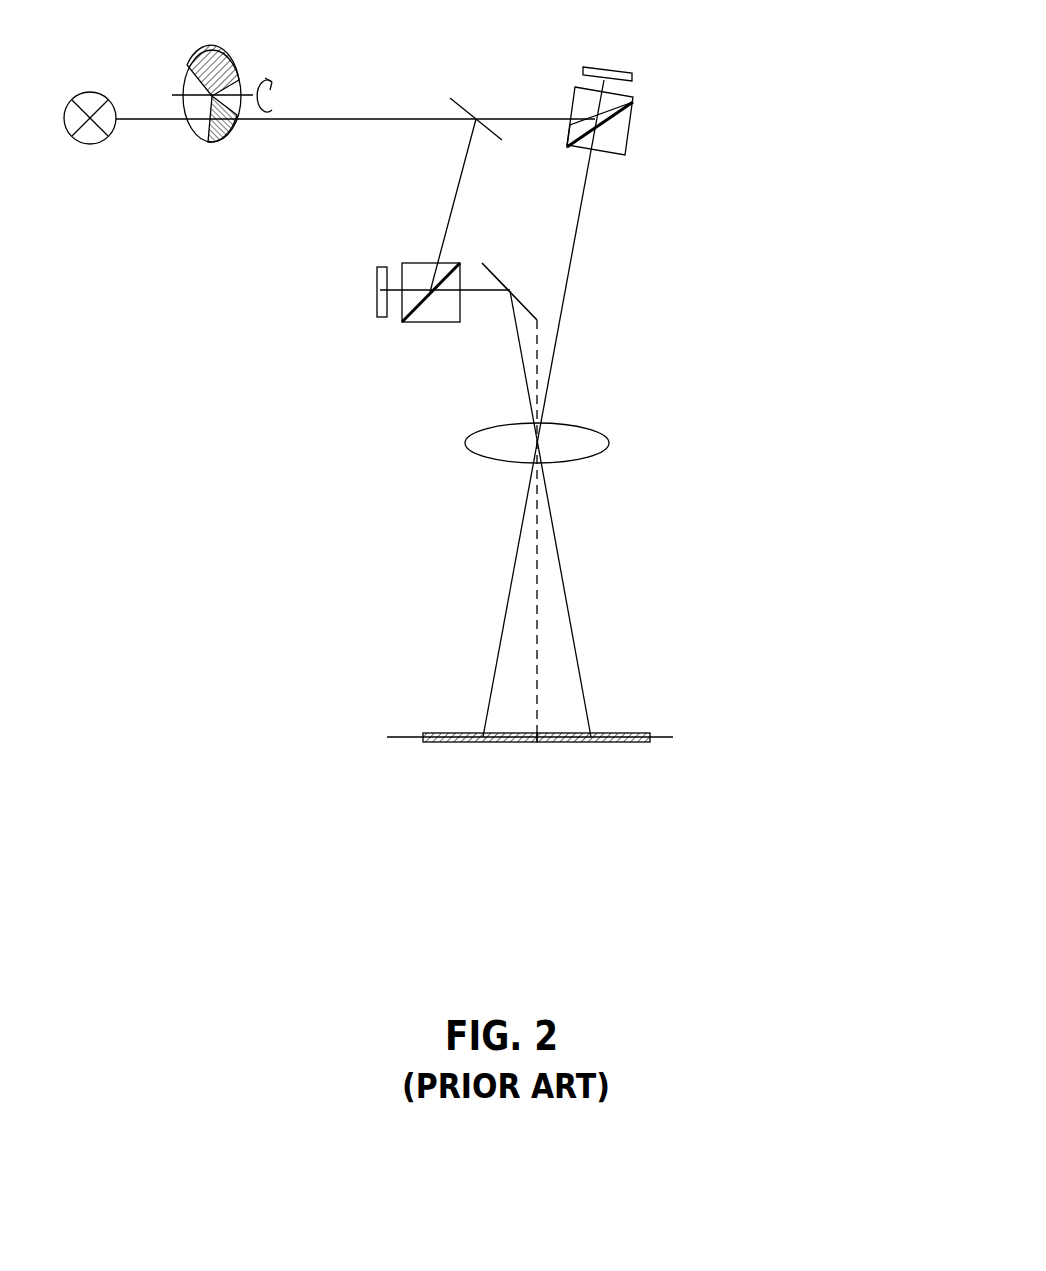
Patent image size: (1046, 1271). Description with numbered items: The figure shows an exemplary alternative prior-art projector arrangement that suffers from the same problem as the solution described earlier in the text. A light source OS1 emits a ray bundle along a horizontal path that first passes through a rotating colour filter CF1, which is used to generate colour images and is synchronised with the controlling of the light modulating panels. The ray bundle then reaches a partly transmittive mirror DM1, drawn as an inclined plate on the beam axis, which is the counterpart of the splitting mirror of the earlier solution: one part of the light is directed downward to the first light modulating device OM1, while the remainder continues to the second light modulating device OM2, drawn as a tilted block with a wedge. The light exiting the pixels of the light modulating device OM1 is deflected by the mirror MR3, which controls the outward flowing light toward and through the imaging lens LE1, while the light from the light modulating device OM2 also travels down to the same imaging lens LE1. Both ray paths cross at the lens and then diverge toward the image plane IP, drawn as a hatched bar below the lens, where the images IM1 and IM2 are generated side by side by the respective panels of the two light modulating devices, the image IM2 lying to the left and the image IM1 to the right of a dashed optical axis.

The light source OS1 is at (91, 103).
The rotating colour filter CF1 is at (222, 86).
The dichroic mirror DM1 is at (477, 108).
The light modulating device OM2 is at (629, 111).
The light modulating device OM1 is at (430, 274).
The mirror MR3 is at (509, 280).
The imaging lens LE1 is at (552, 431).
The image plane IP is at (540, 725).
The image IM1 is at (593, 757).
The image IM2 is at (480, 757).